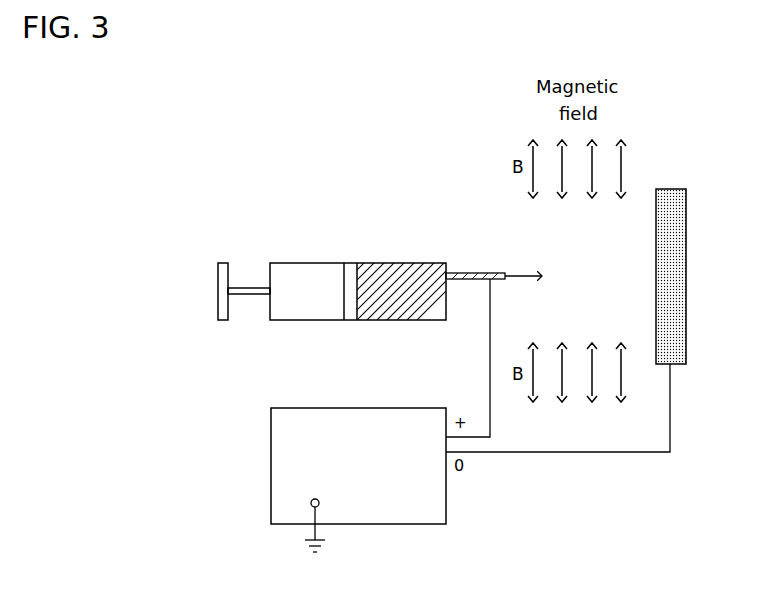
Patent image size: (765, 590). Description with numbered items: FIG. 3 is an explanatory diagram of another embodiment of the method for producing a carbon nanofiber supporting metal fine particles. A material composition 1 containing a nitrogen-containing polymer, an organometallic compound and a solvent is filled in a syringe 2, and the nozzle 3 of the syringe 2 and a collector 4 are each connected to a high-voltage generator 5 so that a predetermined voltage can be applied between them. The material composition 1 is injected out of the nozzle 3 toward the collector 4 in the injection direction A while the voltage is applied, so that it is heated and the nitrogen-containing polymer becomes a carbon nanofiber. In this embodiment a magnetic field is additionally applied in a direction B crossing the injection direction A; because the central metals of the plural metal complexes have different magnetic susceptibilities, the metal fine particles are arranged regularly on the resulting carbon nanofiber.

The material composition 1 is at (397, 290).
The syringe 2 is at (316, 263).
The nozzle 3 is at (472, 273).
The collector 4 is at (674, 269).
The high-voltage generator 5 is at (358, 427).